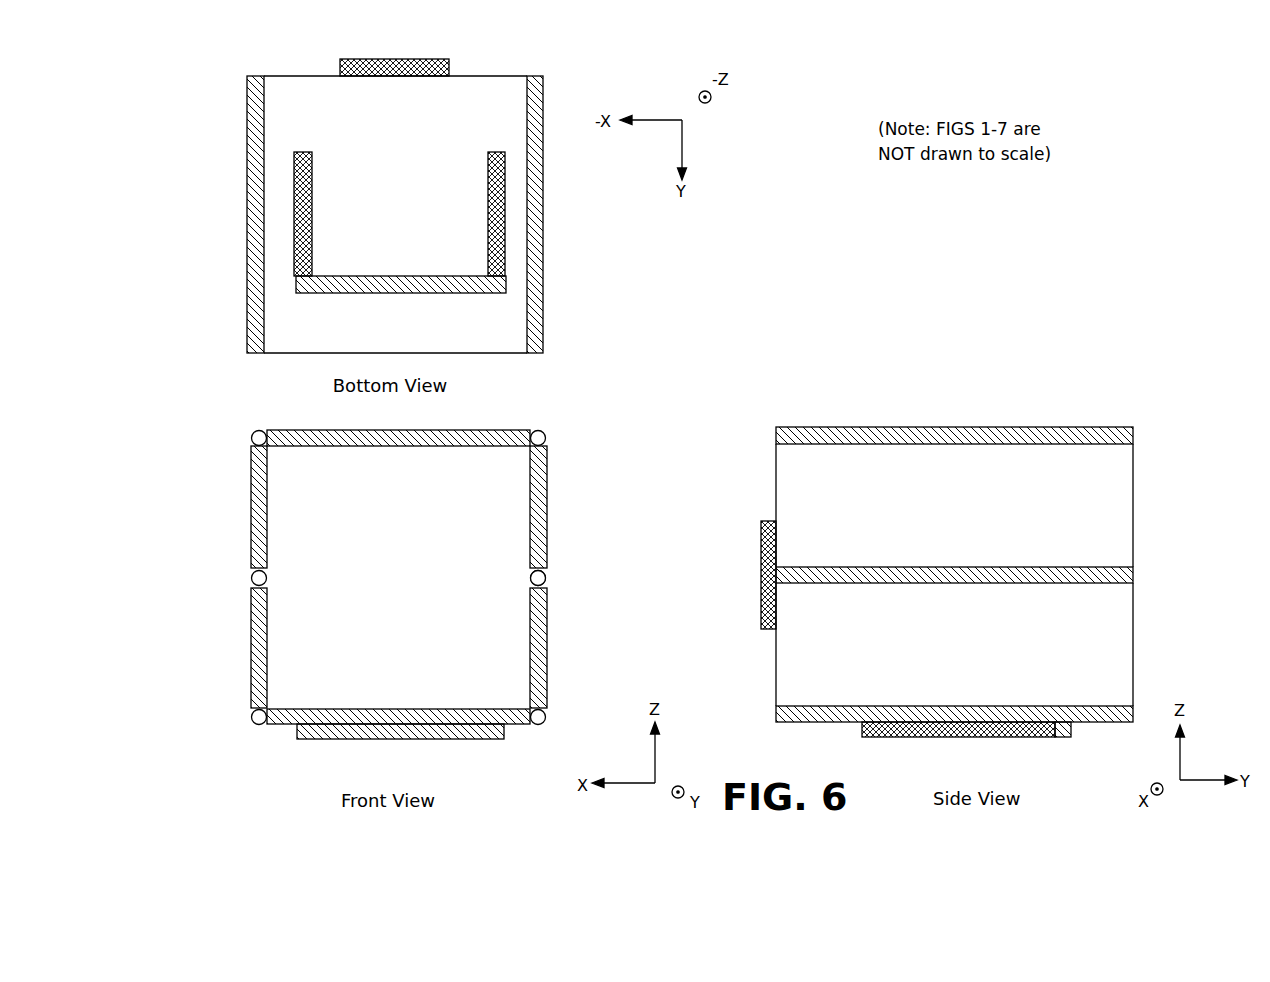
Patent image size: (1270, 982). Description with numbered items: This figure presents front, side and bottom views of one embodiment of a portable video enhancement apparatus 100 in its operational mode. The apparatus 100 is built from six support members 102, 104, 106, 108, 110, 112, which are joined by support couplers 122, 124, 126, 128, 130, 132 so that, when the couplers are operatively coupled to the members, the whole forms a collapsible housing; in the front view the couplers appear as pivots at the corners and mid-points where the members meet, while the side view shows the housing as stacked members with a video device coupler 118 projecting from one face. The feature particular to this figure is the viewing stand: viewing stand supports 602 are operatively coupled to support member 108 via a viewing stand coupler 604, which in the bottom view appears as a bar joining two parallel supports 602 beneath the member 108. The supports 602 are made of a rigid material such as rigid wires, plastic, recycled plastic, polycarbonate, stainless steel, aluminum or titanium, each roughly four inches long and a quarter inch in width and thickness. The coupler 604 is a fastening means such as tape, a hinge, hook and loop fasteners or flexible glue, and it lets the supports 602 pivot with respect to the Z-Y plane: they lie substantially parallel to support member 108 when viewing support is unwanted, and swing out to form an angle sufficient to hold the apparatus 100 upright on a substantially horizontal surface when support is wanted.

The portable video enhancement apparatus 100 is at (586, 69).
The support member 102 is at (455, 432).
The support member 104 is at (540, 505).
The support member 106 is at (540, 640).
The support member 108 is at (432, 133).
The support member 110 is at (258, 644).
The support member 112 is at (258, 503).
The video device coupler 118 is at (377, 67).
The support coupler 122 is at (545, 440).
The support coupler 124 is at (545, 578).
The support coupler 126 is at (535, 268).
The support coupler 128 is at (258, 133).
The support coupler 130 is at (252, 578).
The support coupler 132 is at (252, 438).
The viewing stand support 602 is at (305, 211).
The viewing stand coupler 604 is at (305, 290).